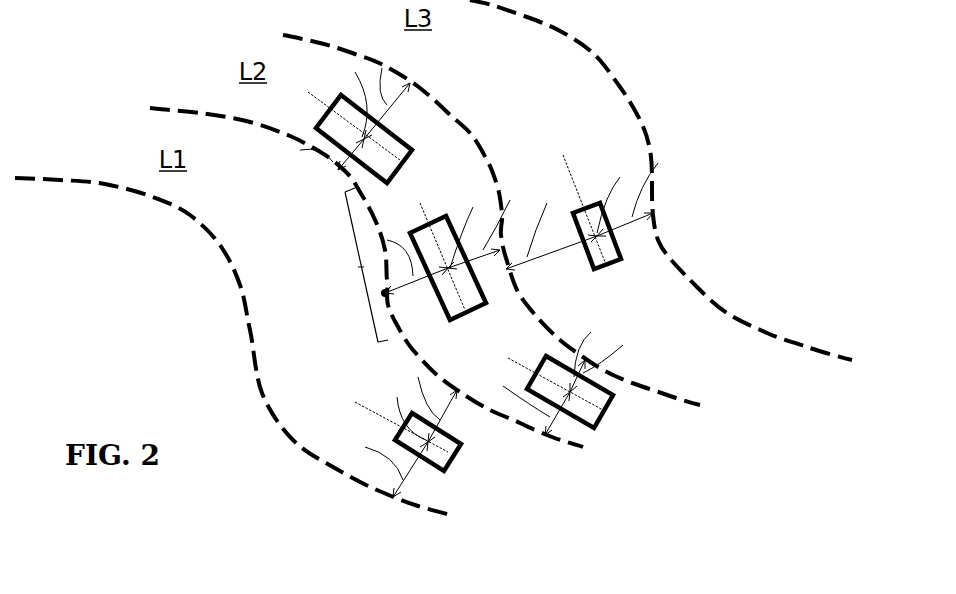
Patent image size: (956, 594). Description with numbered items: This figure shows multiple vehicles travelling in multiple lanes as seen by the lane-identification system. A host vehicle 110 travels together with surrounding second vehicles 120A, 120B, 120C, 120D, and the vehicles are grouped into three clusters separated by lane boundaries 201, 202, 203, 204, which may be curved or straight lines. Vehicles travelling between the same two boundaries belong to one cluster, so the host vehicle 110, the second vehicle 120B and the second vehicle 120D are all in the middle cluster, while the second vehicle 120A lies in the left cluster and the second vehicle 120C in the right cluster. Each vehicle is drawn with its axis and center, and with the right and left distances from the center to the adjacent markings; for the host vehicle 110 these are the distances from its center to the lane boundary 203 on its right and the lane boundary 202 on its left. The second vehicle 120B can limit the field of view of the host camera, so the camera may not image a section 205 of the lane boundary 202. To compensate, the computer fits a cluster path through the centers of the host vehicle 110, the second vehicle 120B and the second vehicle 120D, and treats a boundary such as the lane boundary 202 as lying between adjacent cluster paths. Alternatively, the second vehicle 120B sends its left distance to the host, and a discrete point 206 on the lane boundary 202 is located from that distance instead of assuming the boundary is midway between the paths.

The host vehicle 110 is at (612, 408).
The second vehicle 120A is at (462, 445).
The second vehicle 120B is at (487, 293).
The second vehicle 120C is at (620, 260).
The second vehicle 120D is at (408, 147).
The lane boundary 201 is at (440, 515).
The lane boundary 202 is at (570, 443).
The lane boundary 203 is at (687, 405).
The lane boundary 204 is at (813, 355).
The section of lane boundary 205 is at (360, 267).
The point on lane boundary 206 is at (383, 296).